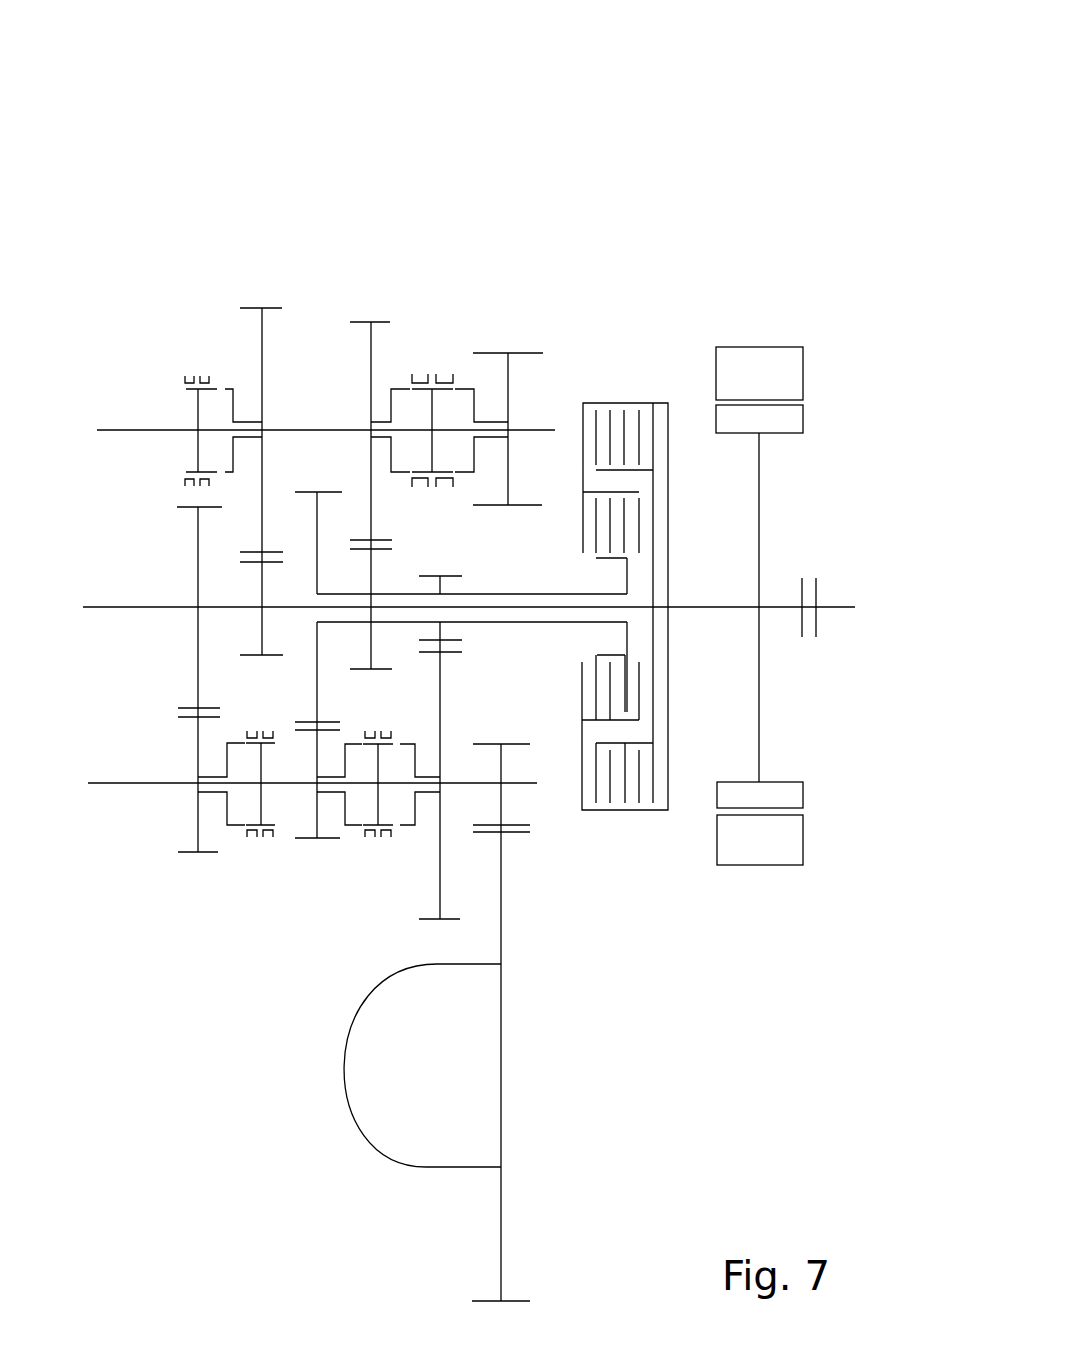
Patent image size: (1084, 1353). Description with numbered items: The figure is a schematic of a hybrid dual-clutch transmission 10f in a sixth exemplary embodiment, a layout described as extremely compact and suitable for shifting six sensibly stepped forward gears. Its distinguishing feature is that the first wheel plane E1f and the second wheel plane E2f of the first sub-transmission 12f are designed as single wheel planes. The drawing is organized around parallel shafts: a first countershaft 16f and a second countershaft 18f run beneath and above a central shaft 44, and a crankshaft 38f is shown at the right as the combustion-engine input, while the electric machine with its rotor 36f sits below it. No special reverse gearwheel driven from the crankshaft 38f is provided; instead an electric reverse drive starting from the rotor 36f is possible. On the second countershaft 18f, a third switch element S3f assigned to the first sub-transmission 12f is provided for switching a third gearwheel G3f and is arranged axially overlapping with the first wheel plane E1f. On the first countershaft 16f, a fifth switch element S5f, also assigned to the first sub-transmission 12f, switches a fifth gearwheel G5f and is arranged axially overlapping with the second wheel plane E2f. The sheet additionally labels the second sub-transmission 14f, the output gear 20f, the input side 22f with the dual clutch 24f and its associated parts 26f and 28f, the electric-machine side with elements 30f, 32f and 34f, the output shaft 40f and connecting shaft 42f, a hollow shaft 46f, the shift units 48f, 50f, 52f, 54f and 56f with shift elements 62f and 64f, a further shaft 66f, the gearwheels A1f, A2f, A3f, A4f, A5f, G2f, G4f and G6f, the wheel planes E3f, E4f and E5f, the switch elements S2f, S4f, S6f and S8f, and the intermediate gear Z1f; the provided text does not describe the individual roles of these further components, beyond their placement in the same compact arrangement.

The hybrid dual-clutch transmission 10f is at (757, 132).
The first sub-transmission 12f is at (200, 162).
The second sub-transmission 14f is at (433, 148).
The first countershaft 16f is at (163, 787).
The second countershaft 18f is at (108, 428).
The output gear 20f is at (503, 803).
The input shaft 22f is at (512, 380).
The dual clutch 24f is at (625, 398).
The drive unit 26f is at (672, 447).
The clutch 28f is at (648, 517).
The electric machine connection 30f is at (808, 642).
The electric machine 32f is at (760, 874).
The electric machine rotor 34f is at (773, 842).
The rotor 36f is at (773, 795).
The crankshaft 38f is at (833, 607).
The output shaft 40f is at (509, 1065).
The connecting shaft 42f is at (778, 608).
The main shaft 44 is at (177, 608).
The hollow shaft 46f is at (547, 592).
The shift unit 48f is at (260, 845).
The shift unit 50f is at (198, 368).
The shift unit 52f is at (377, 845).
The shift sleeve 54f is at (423, 412).
The shift unit 56f is at (398, 380).
The shift element 62f is at (447, 487).
The shift element 64f is at (413, 484).
The shaft 66f is at (501, 930).
The gear wheel A1 A1f is at (180, 517).
The gear wheel A2 A2f is at (260, 640).
The gear wheel A3 A3f is at (317, 512).
The gear wheel A4 A4f is at (371, 548).
The gear wheel A5 A5f is at (443, 632).
The first wheel plane E1f is at (233, 836).
The second wheel plane E2f is at (263, 298).
The gear plane E3 E3f is at (352, 836).
The gear plane E4 E4f is at (372, 312).
The gear plane E5 E5f is at (438, 940).
The gear wheel G2 G2f is at (441, 885).
The third gearwheel G3f is at (262, 357).
The gear wheel G4 G4f is at (392, 397).
The fifth gearwheel G5f is at (198, 755).
The gear wheel G6 G6f is at (330, 845).
The shift element S2 S2f is at (408, 836).
The third switch element S3f is at (228, 378).
The shift element S4 S4f is at (433, 360).
The fifth switch element S5f is at (198, 863).
The shift element S6 S6f is at (318, 848).
The shift element S8 S8f is at (508, 345).
The intermediate gear Z1 Z1f is at (465, 380).